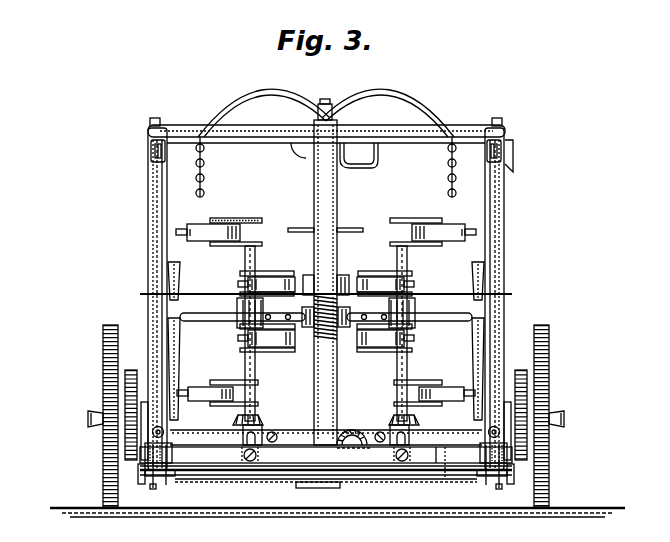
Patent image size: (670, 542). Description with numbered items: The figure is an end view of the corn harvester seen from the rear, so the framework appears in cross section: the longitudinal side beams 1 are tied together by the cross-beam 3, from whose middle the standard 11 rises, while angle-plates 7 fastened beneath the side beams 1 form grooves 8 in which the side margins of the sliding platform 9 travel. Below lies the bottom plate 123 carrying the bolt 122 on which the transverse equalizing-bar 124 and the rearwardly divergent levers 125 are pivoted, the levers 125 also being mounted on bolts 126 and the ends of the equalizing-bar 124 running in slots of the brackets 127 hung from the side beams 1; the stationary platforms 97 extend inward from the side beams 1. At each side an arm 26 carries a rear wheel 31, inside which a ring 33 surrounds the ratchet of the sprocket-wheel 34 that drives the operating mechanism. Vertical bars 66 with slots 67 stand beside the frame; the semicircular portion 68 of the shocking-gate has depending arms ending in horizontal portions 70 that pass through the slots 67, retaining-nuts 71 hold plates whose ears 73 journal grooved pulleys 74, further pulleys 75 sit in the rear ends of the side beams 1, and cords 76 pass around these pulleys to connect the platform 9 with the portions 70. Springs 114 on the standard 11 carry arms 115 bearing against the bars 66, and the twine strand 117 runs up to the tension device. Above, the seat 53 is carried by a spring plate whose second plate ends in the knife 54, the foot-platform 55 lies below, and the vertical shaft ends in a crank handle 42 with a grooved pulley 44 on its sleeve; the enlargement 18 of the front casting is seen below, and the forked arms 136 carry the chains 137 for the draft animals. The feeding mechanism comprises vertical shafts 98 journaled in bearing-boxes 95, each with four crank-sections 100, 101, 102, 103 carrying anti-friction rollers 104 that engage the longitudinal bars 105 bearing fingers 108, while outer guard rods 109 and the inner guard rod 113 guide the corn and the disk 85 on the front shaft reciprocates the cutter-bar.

The longitudinal side beams 1 is at (103, 484).
The cross-beam 3 is at (355, 429).
The angle-plates 7 is at (167, 470).
The groove 8 is at (153, 472).
The horizontal platform 9 is at (326, 476).
The standard 11 is at (314, 183).
The enlargement 18 is at (302, 438).
The arms 26 is at (146, 402).
The rear wheels 31 is at (103, 351).
The circular rings or bands 33 is at (125, 388).
The sprocket-wheels 34 is at (103, 433).
The crank handle 42 is at (372, 168).
The grooved pulley 44 is at (345, 276).
The seat 53 is at (297, 150).
The knife or cutting portion 54 is at (318, 117).
The foot-platform 55 is at (341, 229).
The bar 66 is at (150, 204).
The vertical slots 67 is at (162, 238).
The semicircular portion of shocking-gate 68 is at (378, 134).
The horizontal portions 70 is at (165, 433).
The retaining-nuts 71 is at (150, 133).
The ears 73 is at (152, 153).
The grooved pulley 74 is at (155, 157).
The grooved pulley 75 is at (167, 461).
The cords 76 is at (166, 314).
The disk 85 is at (352, 430).
The bearing-boxes 95 is at (412, 430).
The stationary platforms 97 is at (445, 465).
The vertical shaft 98 is at (245, 365).
The crank-section 100 is at (326, 393).
The crank-section 101 is at (410, 334).
The crank-section 102 is at (410, 284).
The crank-section 103 is at (326, 232).
The anti-friction roller 104 is at (218, 220).
The bars 105 is at (273, 281).
The teeth or fingers 108 is at (248, 283).
The guide or guard rods 109 is at (172, 275).
The inner guard rod 113 is at (326, 310).
The springs 114 is at (310, 345).
The arm 115 is at (150, 294).
The strand 117 is at (512, 170).
The bolt 122 is at (322, 489).
The bottom plate 123 is at (326, 488).
The equalizing-bar 124 is at (300, 480).
The rearwardly divergent levers 125 is at (326, 490).
The bolts 126 is at (219, 480).
The brackets 127 is at (138, 472).
The arms 136 is at (259, 98).
The chains 137 is at (448, 160).